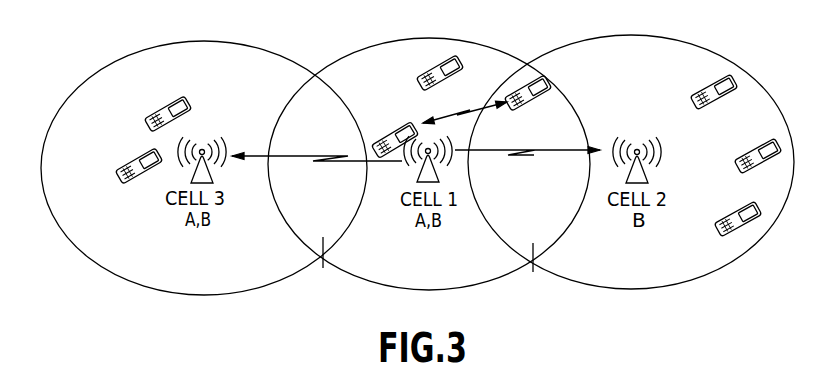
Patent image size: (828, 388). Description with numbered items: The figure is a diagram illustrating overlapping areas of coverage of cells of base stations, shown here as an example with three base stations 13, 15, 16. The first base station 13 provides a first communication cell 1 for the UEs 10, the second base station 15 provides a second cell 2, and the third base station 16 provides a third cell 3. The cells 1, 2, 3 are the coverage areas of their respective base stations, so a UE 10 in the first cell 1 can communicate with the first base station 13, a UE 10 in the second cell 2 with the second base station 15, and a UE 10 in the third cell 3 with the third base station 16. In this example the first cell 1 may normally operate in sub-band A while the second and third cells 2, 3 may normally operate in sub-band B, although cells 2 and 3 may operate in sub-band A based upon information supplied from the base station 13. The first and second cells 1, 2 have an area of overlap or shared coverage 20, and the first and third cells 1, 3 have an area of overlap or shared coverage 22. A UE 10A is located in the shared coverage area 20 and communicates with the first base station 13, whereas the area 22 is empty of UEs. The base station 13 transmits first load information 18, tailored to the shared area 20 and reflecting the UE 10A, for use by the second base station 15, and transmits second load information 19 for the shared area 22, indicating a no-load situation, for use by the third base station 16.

The first communication cell 1 is at (428, 38).
The second cell 2 is at (667, 38).
The third cell 3 is at (203, 42).
The UE 10 is at (165, 110).
The UE 10A is at (541, 86).
The first base station 13 is at (438, 174).
The second base station 15 is at (648, 175).
The third base station 16 is at (212, 176).
The first load information 18 is at (525, 150).
The second load information 19 is at (293, 156).
The area of overlap or shared coverage 20 is at (535, 271).
The area of overlap or shared coverage 22 is at (322, 266).